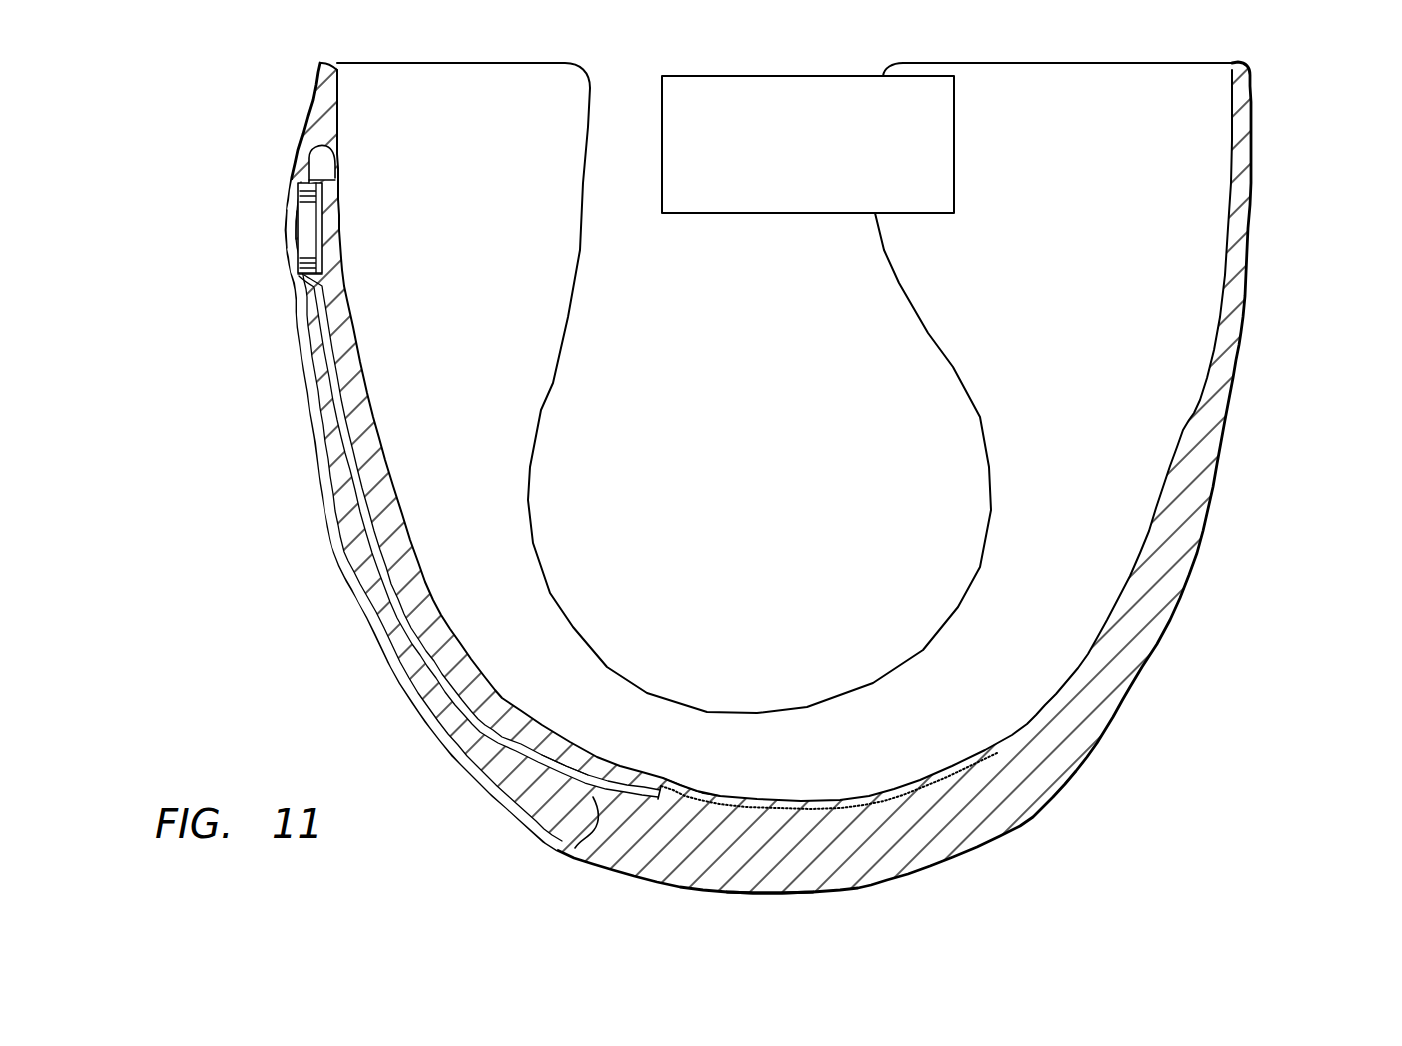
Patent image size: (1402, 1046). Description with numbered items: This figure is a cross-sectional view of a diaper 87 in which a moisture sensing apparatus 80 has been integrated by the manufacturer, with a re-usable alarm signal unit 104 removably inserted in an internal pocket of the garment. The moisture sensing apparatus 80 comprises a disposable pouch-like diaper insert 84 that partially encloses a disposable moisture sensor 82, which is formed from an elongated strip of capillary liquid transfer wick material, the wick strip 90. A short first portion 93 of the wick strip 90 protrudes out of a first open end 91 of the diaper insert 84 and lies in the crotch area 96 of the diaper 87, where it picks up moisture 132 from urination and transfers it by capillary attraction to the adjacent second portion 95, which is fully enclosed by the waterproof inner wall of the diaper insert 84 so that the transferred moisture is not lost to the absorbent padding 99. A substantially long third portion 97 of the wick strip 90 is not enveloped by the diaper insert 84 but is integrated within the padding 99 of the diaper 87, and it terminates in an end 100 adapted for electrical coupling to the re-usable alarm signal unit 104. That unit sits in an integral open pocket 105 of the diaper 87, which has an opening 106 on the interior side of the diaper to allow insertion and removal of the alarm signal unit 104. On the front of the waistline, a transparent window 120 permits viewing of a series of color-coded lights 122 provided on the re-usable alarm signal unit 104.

The moisture sensing apparatus 80 is at (458, 497).
The disposable moisture sensor 82 is at (415, 631).
The diaper insert 84 is at (661, 790).
The diaper 87 is at (1253, 364).
The wick strip 90 is at (356, 441).
The first open end 91 is at (665, 788).
The first portion 93 is at (717, 790).
The second portion 95 is at (567, 840).
The crotch area 96 is at (777, 898).
The third portion 97 is at (338, 596).
The padding 99 is at (485, 693).
The end 100 is at (303, 273).
The re-usable alarm signal unit 104 is at (316, 236).
The open pocket 105 is at (320, 158).
The opening 106 is at (340, 158).
The transparent window 120 is at (278, 242).
The color-coded lights 122 is at (289, 197).
The moisture 132 is at (772, 800).